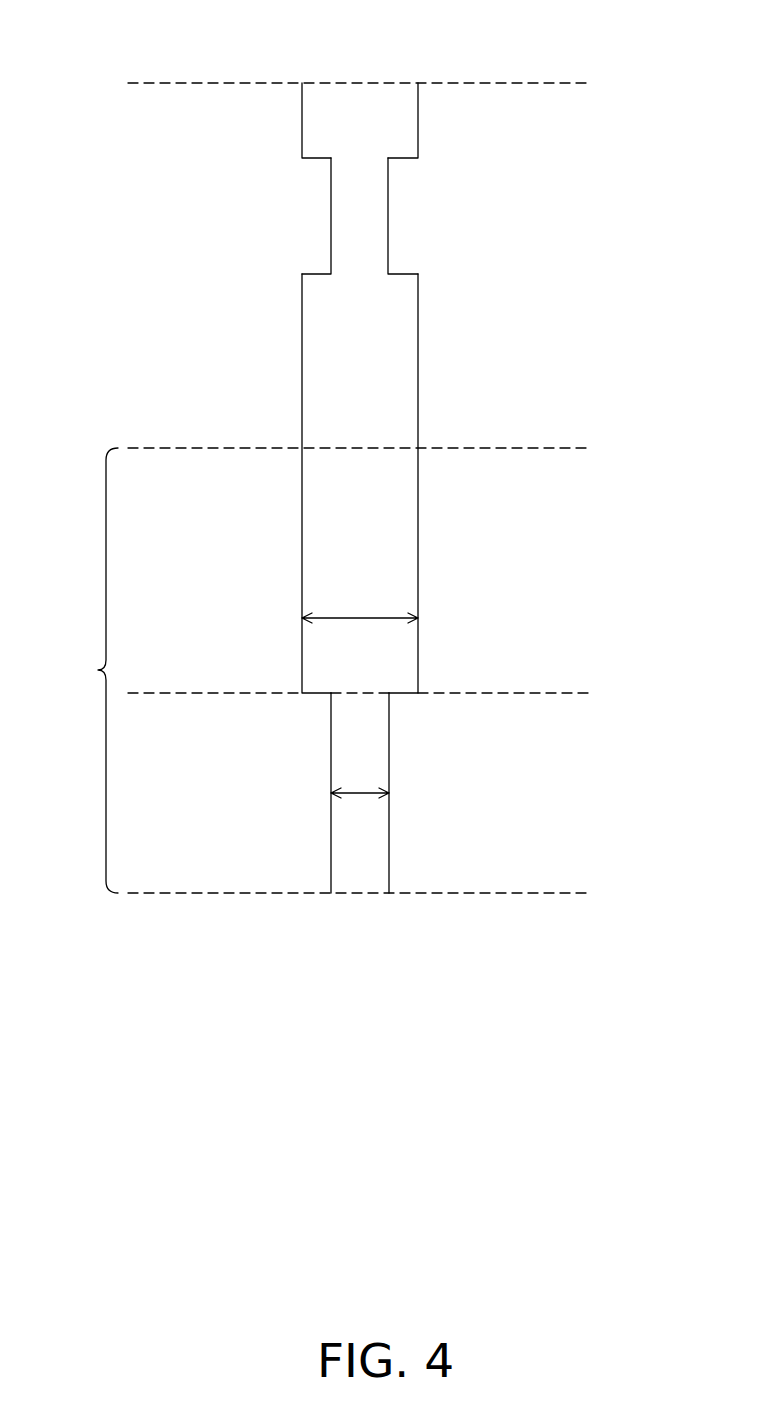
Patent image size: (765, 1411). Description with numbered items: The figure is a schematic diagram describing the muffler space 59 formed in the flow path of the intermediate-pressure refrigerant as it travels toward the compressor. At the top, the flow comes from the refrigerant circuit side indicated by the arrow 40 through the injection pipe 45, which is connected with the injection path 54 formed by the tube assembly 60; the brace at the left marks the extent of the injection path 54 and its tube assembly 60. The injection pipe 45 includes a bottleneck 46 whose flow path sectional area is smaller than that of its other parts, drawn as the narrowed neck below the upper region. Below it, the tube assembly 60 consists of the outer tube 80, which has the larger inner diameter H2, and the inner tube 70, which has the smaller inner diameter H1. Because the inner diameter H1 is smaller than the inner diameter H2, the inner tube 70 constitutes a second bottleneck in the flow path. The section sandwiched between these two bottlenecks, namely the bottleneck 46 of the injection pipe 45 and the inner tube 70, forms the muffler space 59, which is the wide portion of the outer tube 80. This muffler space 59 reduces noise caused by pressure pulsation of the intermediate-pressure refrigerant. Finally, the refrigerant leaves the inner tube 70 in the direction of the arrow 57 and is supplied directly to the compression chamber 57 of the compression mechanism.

The flow direction toward upstream side 40 is at (359, 83).
The injection pipe 45 is at (359, 120).
The bottleneck 46 is at (388, 215).
The muffler space 59 is at (350, 391).
The outer tube 80 is at (359, 570).
The inner tube 70 is at (359, 793).
The injection path 54 is at (74, 670).
The tube assembly 60 is at (74, 670).
The compression chamber 57 is at (359, 893).
The inner diameter of inner tube H1 is at (390, 797).
The inner diameter of outer tube H2 is at (388, 622).